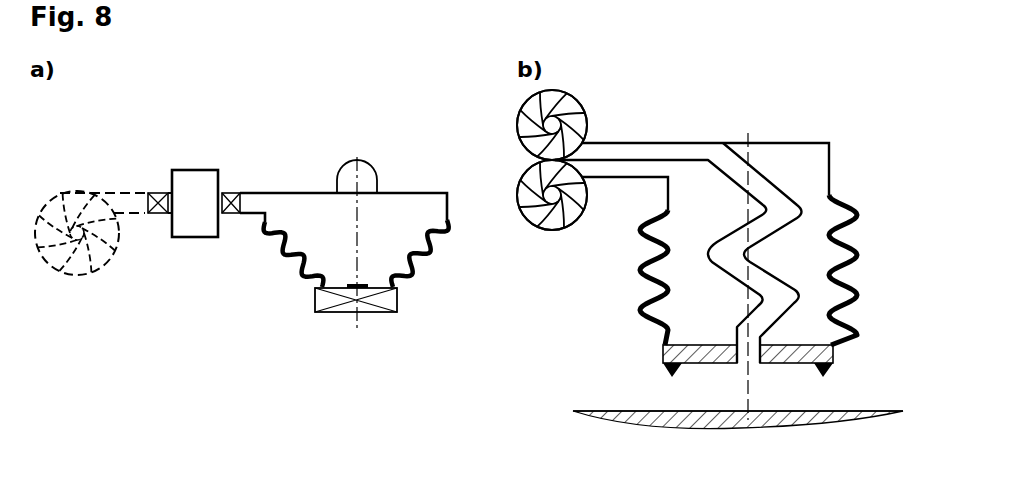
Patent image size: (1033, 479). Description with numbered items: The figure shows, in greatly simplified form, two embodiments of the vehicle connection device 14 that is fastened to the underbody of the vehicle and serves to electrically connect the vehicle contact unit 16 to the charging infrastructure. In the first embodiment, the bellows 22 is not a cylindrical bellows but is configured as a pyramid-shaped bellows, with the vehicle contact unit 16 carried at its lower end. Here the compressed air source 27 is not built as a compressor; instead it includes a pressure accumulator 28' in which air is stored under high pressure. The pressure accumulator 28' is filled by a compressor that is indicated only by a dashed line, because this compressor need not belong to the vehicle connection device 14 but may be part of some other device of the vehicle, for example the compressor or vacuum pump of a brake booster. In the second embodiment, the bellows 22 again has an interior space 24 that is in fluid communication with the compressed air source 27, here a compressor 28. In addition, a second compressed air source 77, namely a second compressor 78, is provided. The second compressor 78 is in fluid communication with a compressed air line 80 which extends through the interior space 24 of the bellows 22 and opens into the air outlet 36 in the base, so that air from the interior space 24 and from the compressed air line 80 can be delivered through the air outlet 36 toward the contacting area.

In FIG. 8a, the vehicle connection device 14 is at (402, 148).
In FIG. 8b, the vehicle connection device 14 is at (833, 110).
In FIG. 8a, the vehicle contact unit 16 is at (302, 318).
In FIG. 8a, the bellows 22 is at (413, 267).
In FIG. 8b, the bellows 22 is at (852, 290).
In FIG. 8b, the interior space 24 is at (806, 175).
In FIG. 8a, the compressed air source 27 is at (162, 158).
In FIG. 8b, the compressed air source 27 is at (540, 230).
In FIG. 8b, the compressor 28 is at (552, 222).
In FIG. 8a, the pressure accumulator 28' is at (223, 178).
In FIG. 8b, the air outlet 36 is at (753, 367).
In FIG. 8b, the second compressed air source 77 is at (558, 93).
In FIG. 8b, the second compressor 78 is at (620, 75).
In FIG. 8b, the compressed air line 80 is at (728, 162).